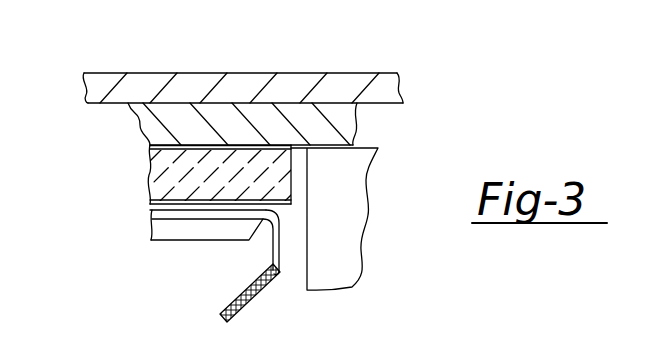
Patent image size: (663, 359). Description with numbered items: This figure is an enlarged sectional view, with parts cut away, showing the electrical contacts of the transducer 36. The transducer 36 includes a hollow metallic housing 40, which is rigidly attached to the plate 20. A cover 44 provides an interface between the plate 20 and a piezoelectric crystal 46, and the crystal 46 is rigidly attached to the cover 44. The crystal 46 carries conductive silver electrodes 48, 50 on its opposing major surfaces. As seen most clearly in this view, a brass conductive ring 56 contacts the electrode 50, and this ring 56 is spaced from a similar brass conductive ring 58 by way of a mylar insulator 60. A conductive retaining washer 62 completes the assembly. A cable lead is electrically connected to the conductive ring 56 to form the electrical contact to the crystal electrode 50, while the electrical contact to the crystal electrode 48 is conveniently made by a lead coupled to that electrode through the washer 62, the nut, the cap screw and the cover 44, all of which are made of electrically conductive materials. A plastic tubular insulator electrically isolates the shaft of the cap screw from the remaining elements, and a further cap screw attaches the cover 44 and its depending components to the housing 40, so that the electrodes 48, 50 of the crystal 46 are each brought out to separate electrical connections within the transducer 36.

The plate 20 is at (398, 77).
The transducer 36 is at (414, 139).
The hollow metallic housing 40 is at (347, 238).
The cover 44 is at (355, 142).
The piezoelectric crystal 46 is at (150, 156).
The conductive silver electrode 48 is at (150, 147).
The conductive silver electrode 50 is at (150, 203).
The brass conductive ring 56 is at (150, 208).
The brass conductive ring 58 is at (149, 216).
The mylar insulator 60 is at (149, 212).
The conductive retaining washer 62 is at (185, 242).